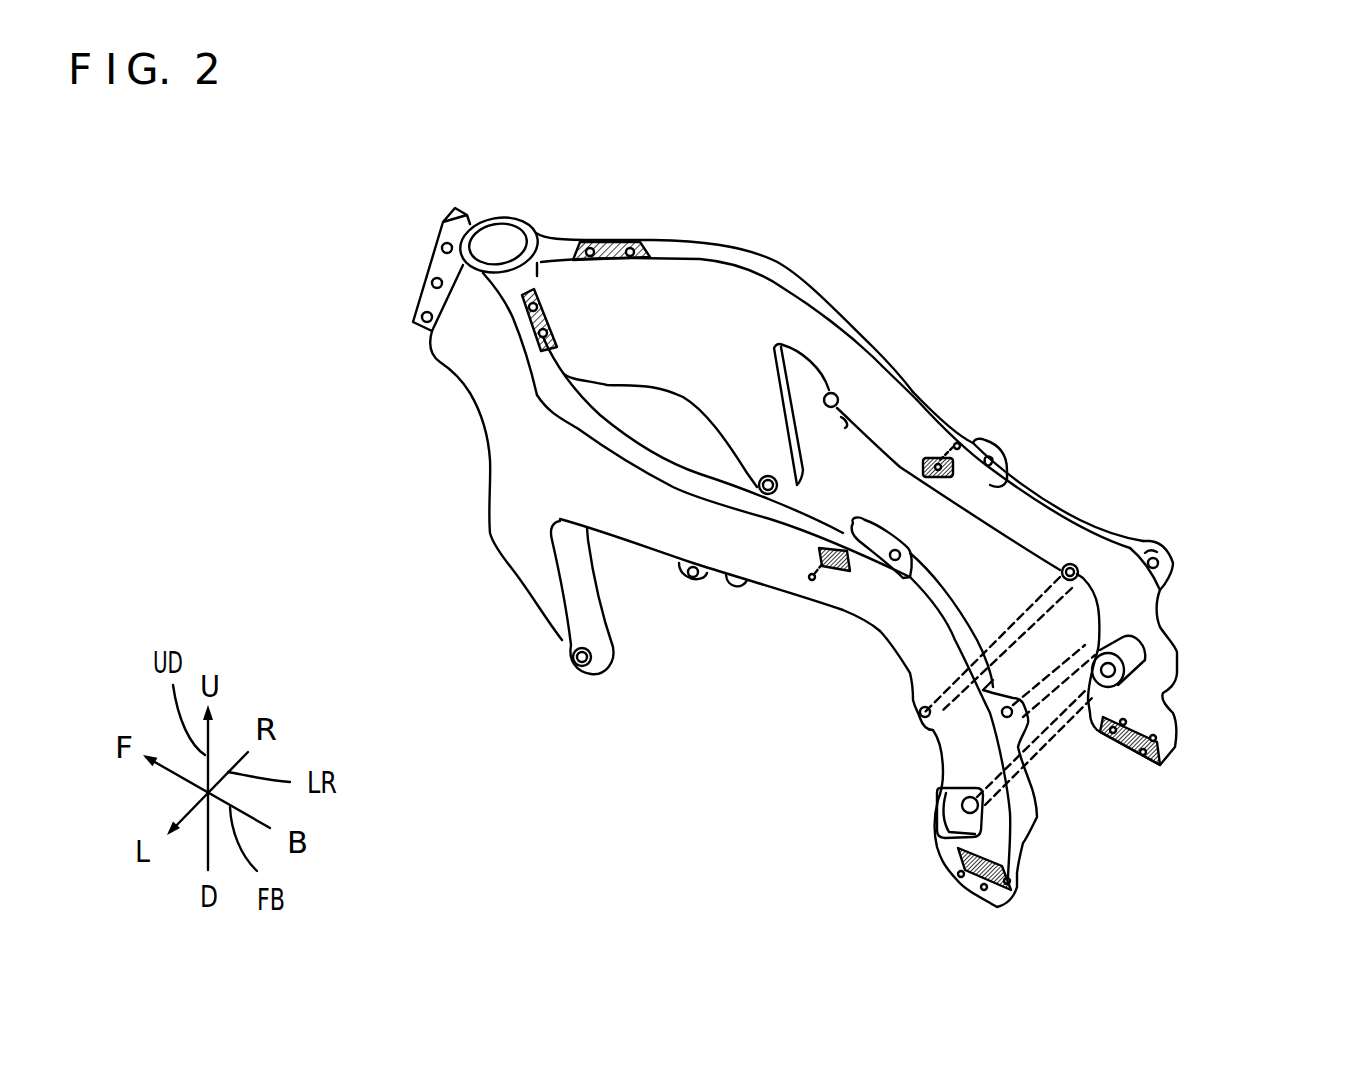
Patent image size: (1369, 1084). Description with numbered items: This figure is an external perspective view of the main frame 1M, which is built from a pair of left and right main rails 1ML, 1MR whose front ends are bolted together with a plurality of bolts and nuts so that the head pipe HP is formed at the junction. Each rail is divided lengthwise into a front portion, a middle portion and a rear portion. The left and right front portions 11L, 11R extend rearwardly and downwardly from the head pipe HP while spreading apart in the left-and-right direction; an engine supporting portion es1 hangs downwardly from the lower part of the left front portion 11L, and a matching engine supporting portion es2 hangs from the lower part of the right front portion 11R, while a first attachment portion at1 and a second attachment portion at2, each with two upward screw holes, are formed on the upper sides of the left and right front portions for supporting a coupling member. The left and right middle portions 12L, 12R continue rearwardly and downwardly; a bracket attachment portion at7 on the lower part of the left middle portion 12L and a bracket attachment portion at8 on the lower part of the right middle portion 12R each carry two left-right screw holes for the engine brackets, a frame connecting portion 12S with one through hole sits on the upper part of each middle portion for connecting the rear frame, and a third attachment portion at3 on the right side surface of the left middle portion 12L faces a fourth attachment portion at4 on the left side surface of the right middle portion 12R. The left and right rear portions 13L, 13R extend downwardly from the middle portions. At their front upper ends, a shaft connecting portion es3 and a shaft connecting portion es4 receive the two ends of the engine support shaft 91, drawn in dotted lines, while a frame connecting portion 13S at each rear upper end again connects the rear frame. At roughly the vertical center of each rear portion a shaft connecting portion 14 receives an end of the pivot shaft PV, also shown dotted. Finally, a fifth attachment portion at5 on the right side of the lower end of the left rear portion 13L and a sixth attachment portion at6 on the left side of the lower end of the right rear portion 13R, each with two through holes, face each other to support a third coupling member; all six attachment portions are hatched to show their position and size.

The main frame 1M is at (367, 233).
The head pipe HP is at (453, 298).
The right main rail 1MR is at (1260, 125).
The left main rail 1ML is at (723, 815).
The right front portion 11R is at (727, 242).
The right middle portion 12R is at (933, 413).
The right rear portion 13R is at (1170, 630).
The left front portion 11L is at (505, 400).
The left middle portion 12L is at (773, 567).
The left rear portion 13L is at (958, 747).
The frame connecting portion 12S is at (1012, 470).
The frame connecting portion 13S is at (1147, 547).
The shaft connecting portion 14 is at (1137, 655).
The engine support shaft 91 is at (1040, 594).
The pivot shaft PV is at (1067, 737).
The engine supporting portion es1 is at (563, 630).
The engine supporting portion es2 is at (750, 470).
The shaft connecting portion es3 is at (913, 703).
The shaft connecting portion es4 is at (1087, 570).
The first attachment portion at1 is at (546, 316).
The second attachment portion at2 is at (607, 241).
The third attachment portion at3 is at (818, 545).
The fourth attachment portion at4 is at (1017, 503).
The fifth attachment portion at5 is at (1023, 866).
The sixth attachment portion at6 is at (1117, 760).
The bracket attachment portion at7 is at (694, 596).
The bracket attachment portion at8 is at (848, 368).